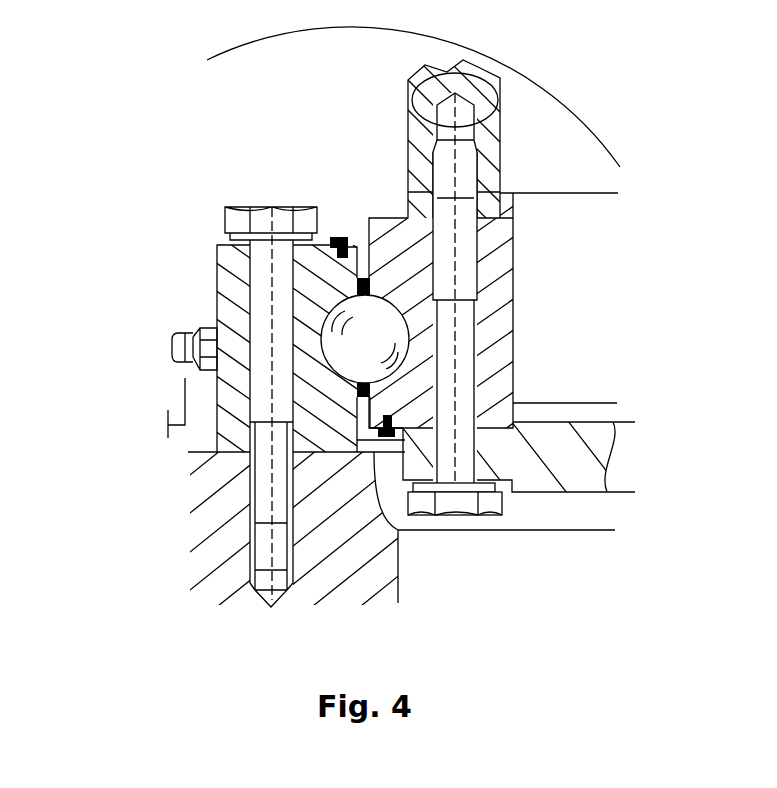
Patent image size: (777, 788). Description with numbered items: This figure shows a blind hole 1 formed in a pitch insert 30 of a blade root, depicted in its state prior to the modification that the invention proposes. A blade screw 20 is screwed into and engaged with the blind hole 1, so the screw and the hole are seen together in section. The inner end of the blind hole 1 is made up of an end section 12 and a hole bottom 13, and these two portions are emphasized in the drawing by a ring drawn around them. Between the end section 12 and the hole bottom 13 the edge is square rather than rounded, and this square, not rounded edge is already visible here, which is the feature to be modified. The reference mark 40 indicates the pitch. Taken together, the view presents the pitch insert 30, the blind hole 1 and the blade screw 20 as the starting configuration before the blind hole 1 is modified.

The blind hole 1 is at (402, 286).
The end section 12 is at (349, 138).
The hole bottom 13 is at (397, 100).
The blade screw 20 is at (467, 356).
The pitch insert 30 is at (397, 165).
The pitch 40 is at (198, 393).